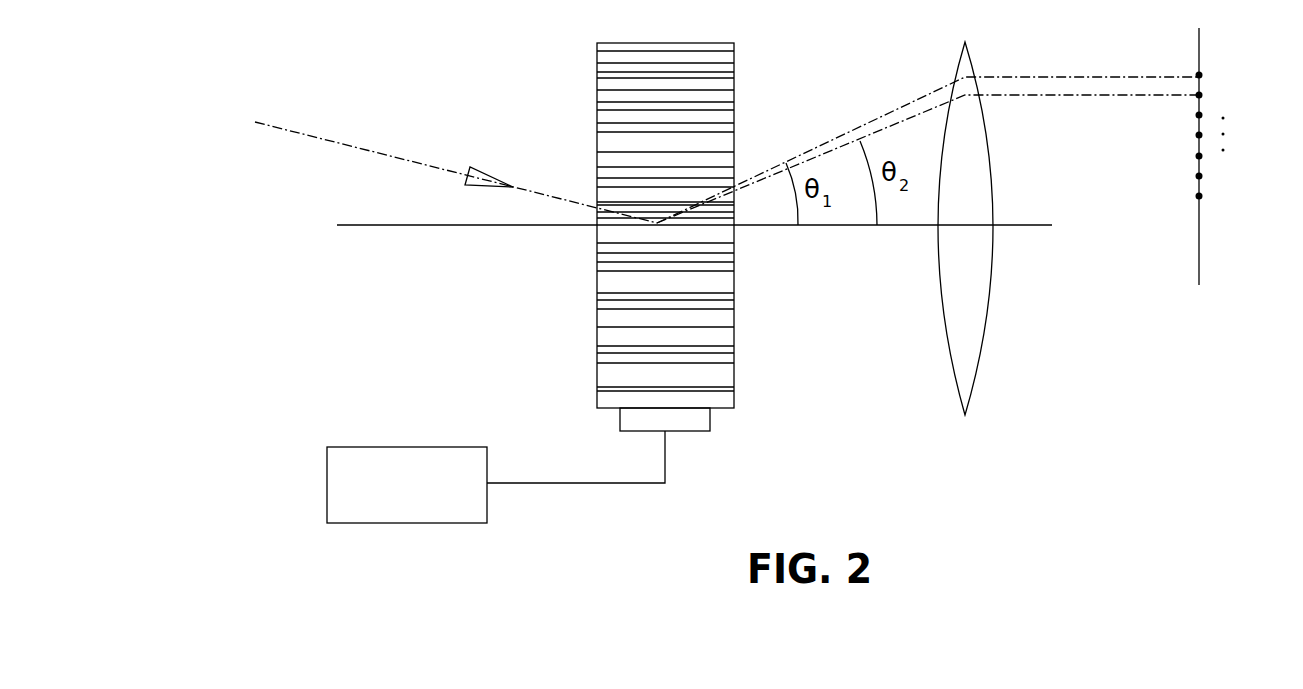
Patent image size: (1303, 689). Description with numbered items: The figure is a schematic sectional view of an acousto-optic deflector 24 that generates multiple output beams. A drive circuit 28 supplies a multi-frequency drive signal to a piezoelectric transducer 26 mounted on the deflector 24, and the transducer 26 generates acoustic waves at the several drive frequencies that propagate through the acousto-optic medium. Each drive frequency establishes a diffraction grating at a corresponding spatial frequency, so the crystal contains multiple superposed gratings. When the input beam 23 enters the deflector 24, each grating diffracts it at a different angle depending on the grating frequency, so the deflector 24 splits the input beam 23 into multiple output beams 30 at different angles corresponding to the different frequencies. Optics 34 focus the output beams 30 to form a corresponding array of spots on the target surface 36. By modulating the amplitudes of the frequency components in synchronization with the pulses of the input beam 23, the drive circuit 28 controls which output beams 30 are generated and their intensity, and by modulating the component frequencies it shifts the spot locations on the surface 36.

The input beam 23 is at (300, 135).
The acousto-optic deflector 24 is at (597, 103).
The piezoelectric transducer 26 is at (698, 431).
The drive circuit 28 is at (422, 523).
The output beams 30 is at (930, 112).
The optics 34 is at (975, 377).
The target surface 36 is at (1199, 258).